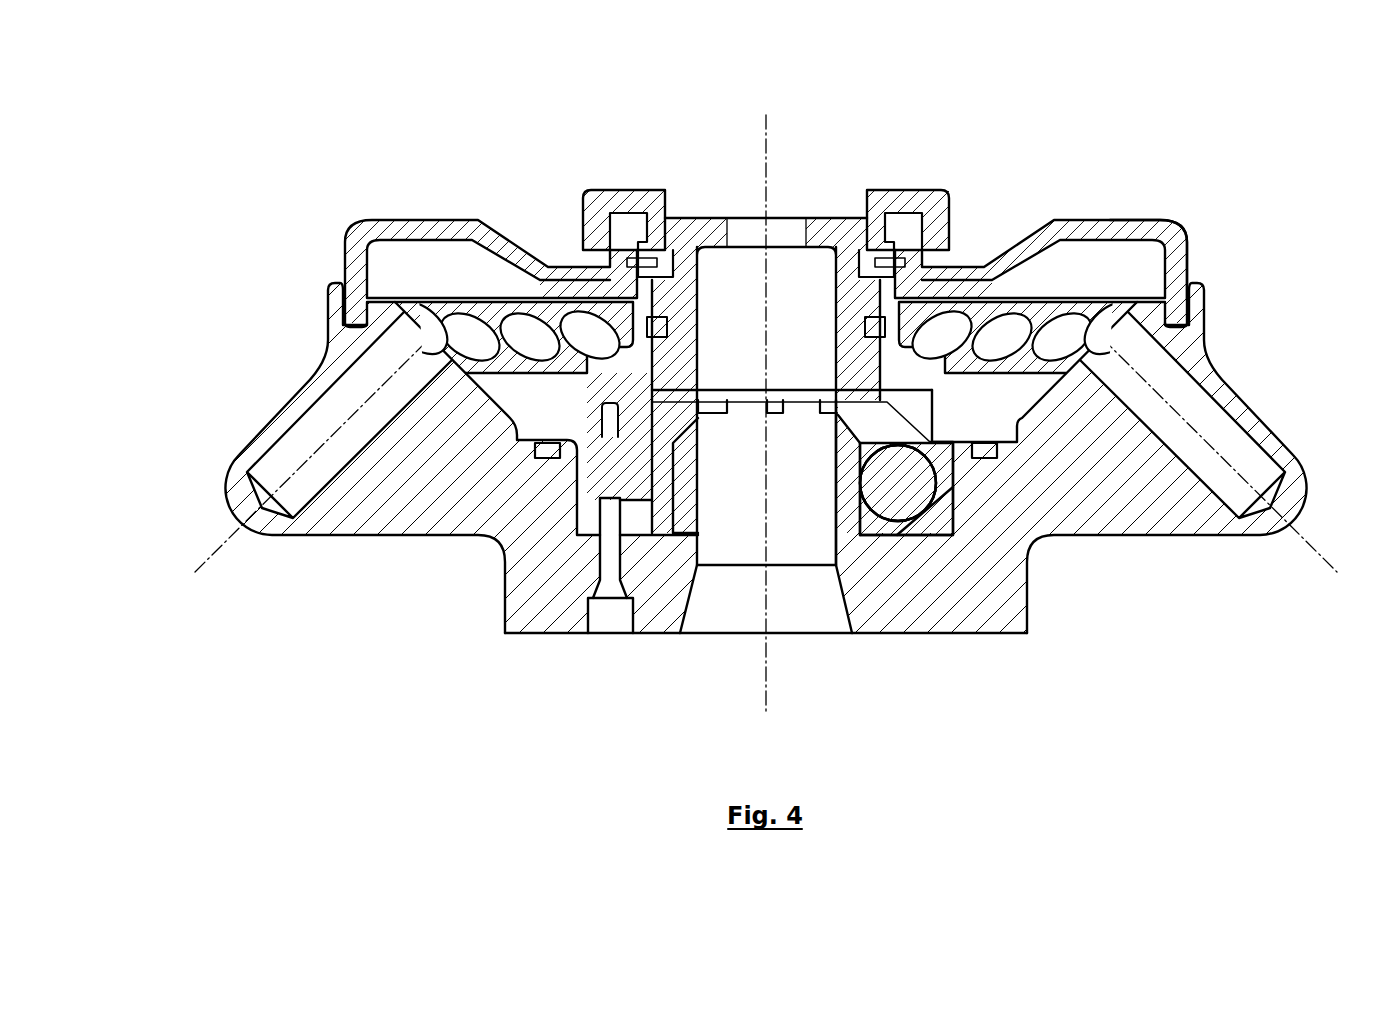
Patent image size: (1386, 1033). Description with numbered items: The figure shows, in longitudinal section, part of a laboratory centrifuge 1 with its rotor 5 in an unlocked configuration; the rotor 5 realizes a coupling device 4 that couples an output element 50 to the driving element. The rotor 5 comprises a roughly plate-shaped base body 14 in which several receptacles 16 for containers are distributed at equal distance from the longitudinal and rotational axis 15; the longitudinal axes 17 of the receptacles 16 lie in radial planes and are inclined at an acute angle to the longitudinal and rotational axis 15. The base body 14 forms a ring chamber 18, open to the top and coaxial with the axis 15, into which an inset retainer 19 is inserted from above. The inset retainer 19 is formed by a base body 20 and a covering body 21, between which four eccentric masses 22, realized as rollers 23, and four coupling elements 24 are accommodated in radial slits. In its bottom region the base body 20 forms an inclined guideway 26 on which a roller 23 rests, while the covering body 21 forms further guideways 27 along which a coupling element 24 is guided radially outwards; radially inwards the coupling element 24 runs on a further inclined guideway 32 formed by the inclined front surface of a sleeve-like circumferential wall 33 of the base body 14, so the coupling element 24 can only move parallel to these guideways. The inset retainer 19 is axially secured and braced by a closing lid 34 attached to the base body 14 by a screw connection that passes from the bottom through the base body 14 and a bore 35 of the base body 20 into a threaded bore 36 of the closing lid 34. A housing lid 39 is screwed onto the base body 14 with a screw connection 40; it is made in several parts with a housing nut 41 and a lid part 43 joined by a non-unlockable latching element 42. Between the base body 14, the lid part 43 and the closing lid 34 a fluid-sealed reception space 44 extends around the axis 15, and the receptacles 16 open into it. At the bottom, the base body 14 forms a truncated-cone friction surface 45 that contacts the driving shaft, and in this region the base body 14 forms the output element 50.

The laboratory centrifuge 1 is at (973, 167).
The coupling device 4 is at (892, 536).
The rotor 5 is at (357, 536).
The base body 14 is at (1103, 510).
The longitudinal and rotational axis 15 is at (767, 687).
The receptacle 16 is at (288, 450).
The longitudinal axis of the receptacle 17 is at (343, 420).
The ring chamber 18 is at (875, 523).
The inset retainer 19 is at (917, 400).
The base body of the inset retainer 20 is at (643, 513).
The covering body 21 is at (885, 393).
The eccentric mass 22 is at (905, 500).
The roller 23 is at (908, 608).
The coupling element 24 is at (867, 431).
The guideway 26 is at (950, 482).
The further guideway 27 is at (856, 400).
The further inclined guideway 32 is at (852, 422).
The sleeve-like circumferential wall 33 is at (686, 503).
The closing lid 34 is at (721, 227).
The bore 35 is at (605, 505).
The threaded bore 36 is at (596, 420).
The housing lid 39 is at (1081, 225).
The screw connection 40 is at (677, 224).
The housing nut 41 is at (900, 205).
The latching element 42 is at (903, 258).
The lid part 43 is at (1127, 222).
The reception space 44 is at (1021, 393).
The friction surface 45 is at (838, 440).
The output element 50 is at (680, 605).